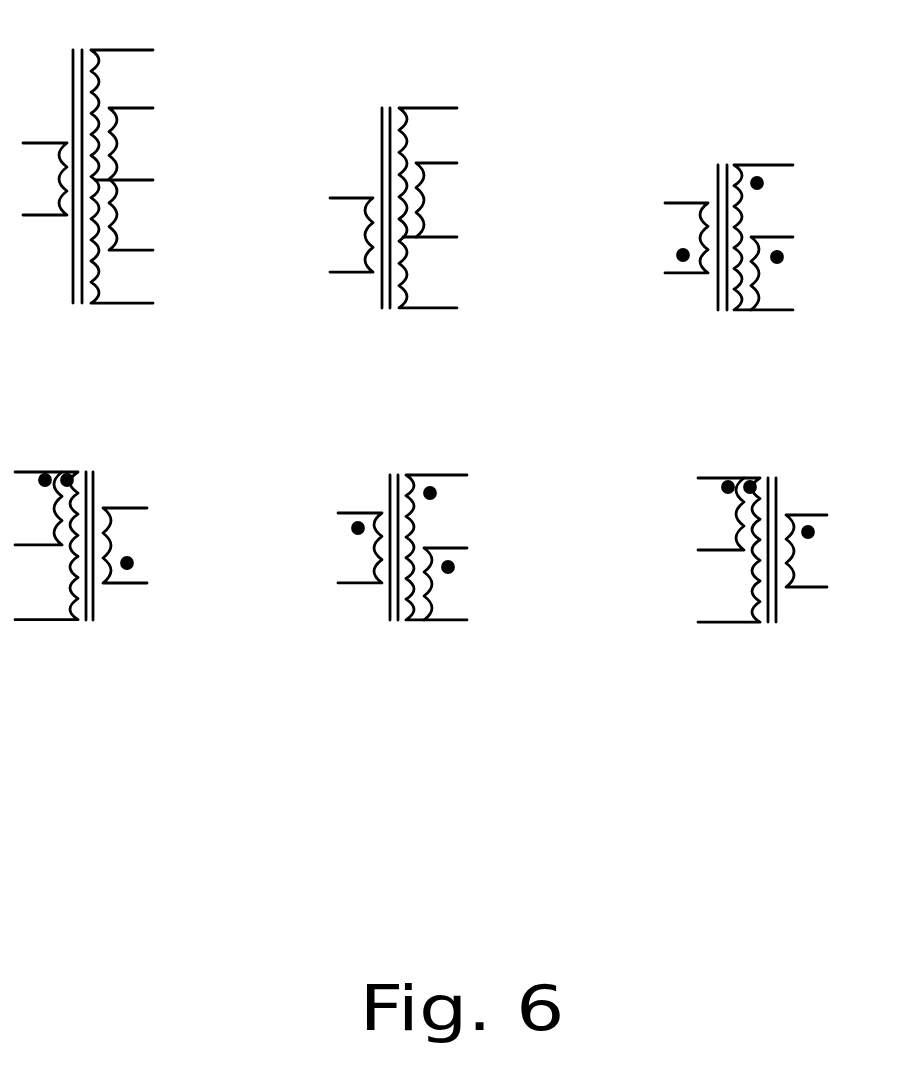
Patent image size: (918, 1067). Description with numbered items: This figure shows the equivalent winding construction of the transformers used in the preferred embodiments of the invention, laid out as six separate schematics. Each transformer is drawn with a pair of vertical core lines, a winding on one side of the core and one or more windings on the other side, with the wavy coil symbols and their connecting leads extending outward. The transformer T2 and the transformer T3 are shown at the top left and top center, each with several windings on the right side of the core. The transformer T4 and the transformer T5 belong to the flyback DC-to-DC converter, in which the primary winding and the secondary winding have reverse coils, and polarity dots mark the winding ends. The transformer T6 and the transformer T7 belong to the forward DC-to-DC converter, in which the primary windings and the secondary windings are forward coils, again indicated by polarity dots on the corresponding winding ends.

The transformer T2 is at (88, 180).
The transformer T3 is at (393, 206).
The transformer T4 is at (729, 235).
The transformer T5 is at (81, 541).
The transformer T6 is at (402, 537).
The transformer T7 is at (762, 540).